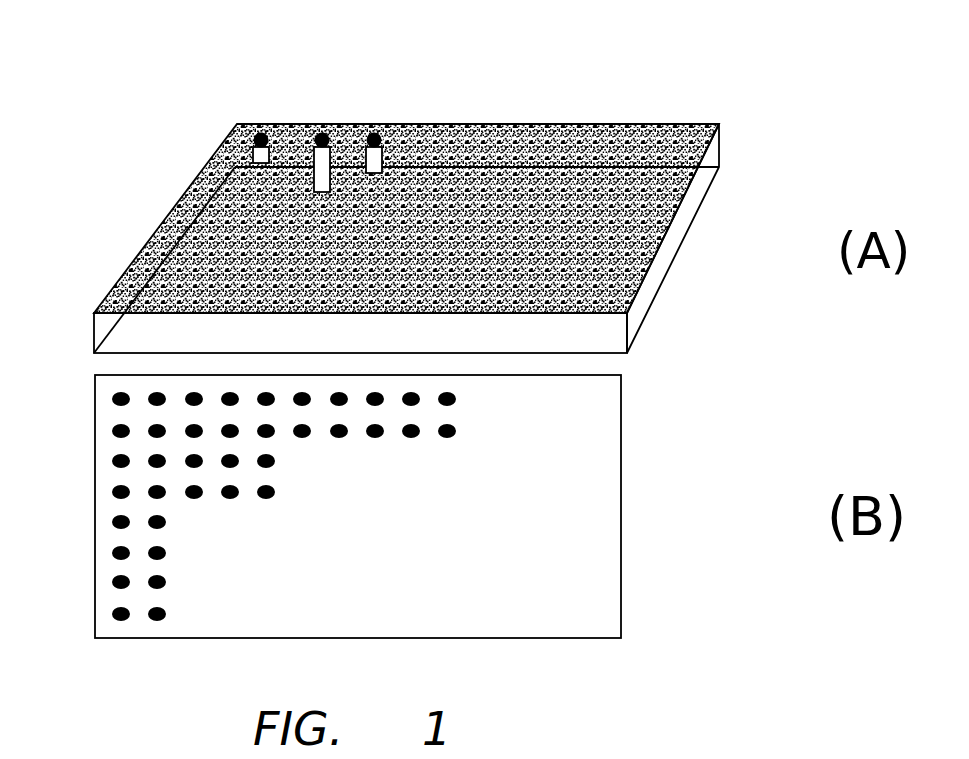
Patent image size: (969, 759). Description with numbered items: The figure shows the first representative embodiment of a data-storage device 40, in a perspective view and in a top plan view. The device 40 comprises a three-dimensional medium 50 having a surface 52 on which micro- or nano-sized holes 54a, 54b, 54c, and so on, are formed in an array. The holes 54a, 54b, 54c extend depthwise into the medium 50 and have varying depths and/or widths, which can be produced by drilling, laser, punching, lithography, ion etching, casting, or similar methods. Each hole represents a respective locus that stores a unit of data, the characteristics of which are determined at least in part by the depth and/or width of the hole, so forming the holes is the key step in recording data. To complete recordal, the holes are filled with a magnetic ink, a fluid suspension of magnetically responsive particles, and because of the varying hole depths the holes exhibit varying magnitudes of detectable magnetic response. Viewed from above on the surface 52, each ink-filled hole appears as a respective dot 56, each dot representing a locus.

The data-storage device 40 is at (656, 75).
The three-dimensional medium 50 is at (100, 332).
The surface 52 is at (677, 140).
The hole 54a is at (253, 150).
The hole 54b is at (330, 153).
The hole 54c is at (382, 153).
The dot 56 is at (108, 400).